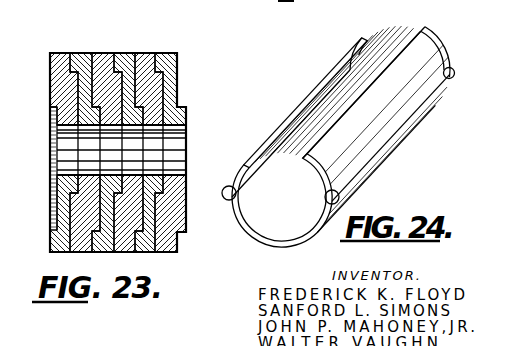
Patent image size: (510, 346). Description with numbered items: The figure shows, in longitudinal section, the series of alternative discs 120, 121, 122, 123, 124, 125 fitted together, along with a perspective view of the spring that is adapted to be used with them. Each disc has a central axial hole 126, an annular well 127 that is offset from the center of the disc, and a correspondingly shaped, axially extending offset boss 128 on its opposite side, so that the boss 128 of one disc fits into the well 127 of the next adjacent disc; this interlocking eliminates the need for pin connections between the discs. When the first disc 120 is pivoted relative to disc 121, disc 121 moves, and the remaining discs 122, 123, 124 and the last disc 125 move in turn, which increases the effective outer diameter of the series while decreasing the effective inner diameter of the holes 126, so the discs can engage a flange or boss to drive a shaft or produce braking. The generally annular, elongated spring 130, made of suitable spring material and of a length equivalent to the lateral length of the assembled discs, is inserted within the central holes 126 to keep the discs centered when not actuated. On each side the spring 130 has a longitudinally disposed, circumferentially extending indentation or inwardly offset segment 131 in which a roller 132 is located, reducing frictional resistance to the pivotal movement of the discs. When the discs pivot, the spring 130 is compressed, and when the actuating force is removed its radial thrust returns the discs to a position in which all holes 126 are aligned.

In FIG. 23, the disc 120 is at (62, 56).
In FIG. 23, the disc 121 is at (78, 52).
In FIG. 23, the disc 122 is at (101, 57).
In FIG. 23, the disc 123 is at (123, 54).
In FIG. 23, the disc 124 is at (143, 54).
In FIG. 23, the disc 125 is at (173, 53).
In FIG. 23, the central axial hole 126 is at (68, 127).
In FIG. 23, the annular well 127 is at (53, 112).
In FIG. 23, the offset boss 128 is at (168, 84).
In FIG. 24, the spring 130 is at (256, 237).
In FIG. 24, the inwardly offset segment 131 is at (356, 68).
In FIG. 24, the roller 132 is at (227, 185).